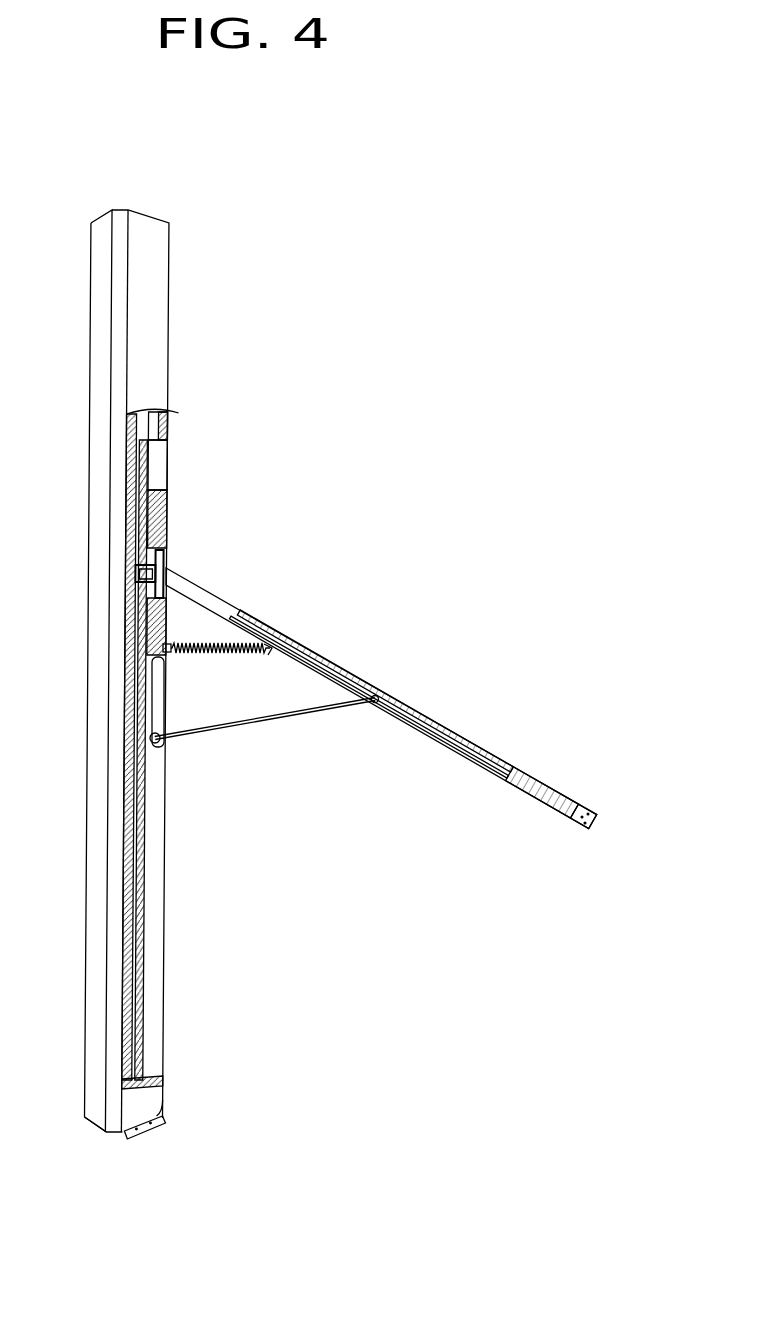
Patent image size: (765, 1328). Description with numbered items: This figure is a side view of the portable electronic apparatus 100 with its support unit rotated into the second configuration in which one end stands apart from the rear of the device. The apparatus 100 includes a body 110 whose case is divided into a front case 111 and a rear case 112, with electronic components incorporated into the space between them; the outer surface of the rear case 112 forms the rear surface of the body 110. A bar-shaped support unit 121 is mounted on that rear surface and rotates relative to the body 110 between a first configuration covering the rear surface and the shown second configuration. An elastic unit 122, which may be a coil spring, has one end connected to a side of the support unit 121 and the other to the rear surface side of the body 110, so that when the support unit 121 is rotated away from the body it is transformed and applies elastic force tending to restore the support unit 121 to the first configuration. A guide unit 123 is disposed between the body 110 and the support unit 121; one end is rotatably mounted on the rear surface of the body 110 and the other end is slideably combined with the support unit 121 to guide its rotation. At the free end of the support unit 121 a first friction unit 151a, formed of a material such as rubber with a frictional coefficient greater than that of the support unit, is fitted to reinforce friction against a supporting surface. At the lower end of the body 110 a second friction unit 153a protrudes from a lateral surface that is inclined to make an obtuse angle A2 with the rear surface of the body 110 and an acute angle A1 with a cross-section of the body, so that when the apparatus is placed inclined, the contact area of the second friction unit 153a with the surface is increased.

The portable electronic apparatus 100 is at (330, 343).
The body 110 is at (186, 134).
The front case 111 is at (101, 222).
The rear case 112 is at (150, 226).
The support unit 121 is at (556, 792).
The elastic unit 122 is at (232, 649).
The guide unit 123 is at (272, 722).
The first friction unit 151a is at (580, 833).
The second friction unit 153a is at (153, 1135).
The acute angle A1 is at (130, 1122).
The obtuse angle A2 is at (166, 1091).